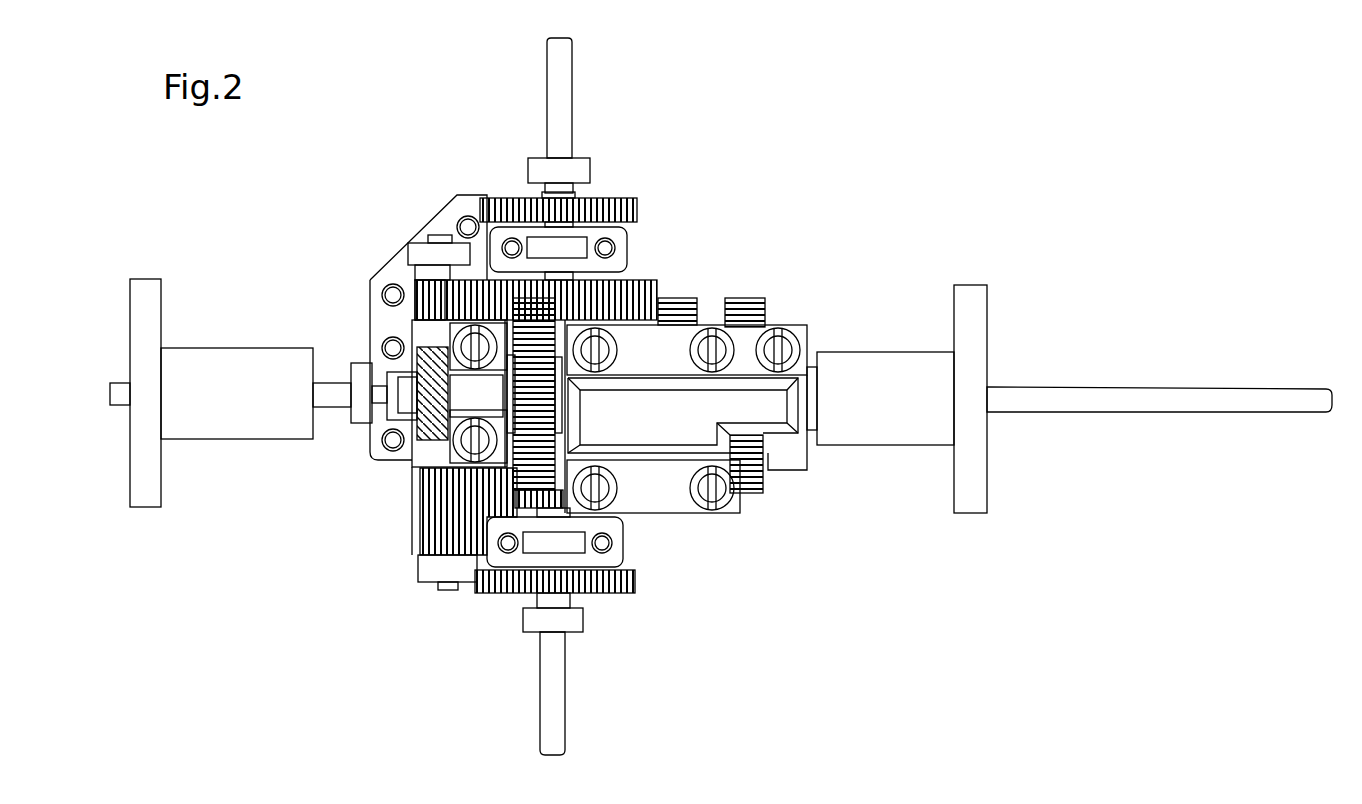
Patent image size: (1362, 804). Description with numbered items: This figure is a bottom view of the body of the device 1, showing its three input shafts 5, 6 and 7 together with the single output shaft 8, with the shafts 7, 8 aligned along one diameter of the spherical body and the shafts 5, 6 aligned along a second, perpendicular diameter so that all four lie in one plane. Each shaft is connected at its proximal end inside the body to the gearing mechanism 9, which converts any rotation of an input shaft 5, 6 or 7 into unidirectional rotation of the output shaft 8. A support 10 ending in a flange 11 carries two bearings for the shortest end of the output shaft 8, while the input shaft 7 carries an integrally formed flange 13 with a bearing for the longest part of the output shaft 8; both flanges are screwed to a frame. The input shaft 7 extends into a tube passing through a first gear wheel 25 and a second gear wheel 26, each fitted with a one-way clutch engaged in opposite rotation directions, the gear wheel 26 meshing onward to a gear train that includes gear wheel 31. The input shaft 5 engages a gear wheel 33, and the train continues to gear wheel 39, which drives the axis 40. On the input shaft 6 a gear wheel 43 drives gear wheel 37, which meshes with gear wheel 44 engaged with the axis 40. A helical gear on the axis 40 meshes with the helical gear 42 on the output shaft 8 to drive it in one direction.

The device 1 is at (770, 250).
The input shaft 5 is at (563, 700).
The input shaft 6 is at (570, 73).
The input shaft 7 is at (885, 350).
The output shaft 8 is at (108, 392).
The gearing mechanism 9 is at (418, 338).
The support 10 is at (231, 347).
The flange 11 is at (147, 283).
The flange 13 is at (973, 283).
The first gear wheel 25 is at (748, 495).
The second gear wheel 26 is at (688, 298).
The gear wheel 31 is at (533, 280).
The gear wheel 33 is at (630, 597).
The gear wheel 37 is at (648, 280).
The gear wheel 39 is at (410, 537).
The axis 40 is at (440, 557).
The helical gear 42 is at (418, 423).
The gear wheel 43 is at (625, 196).
The gear wheel 44 is at (416, 288).